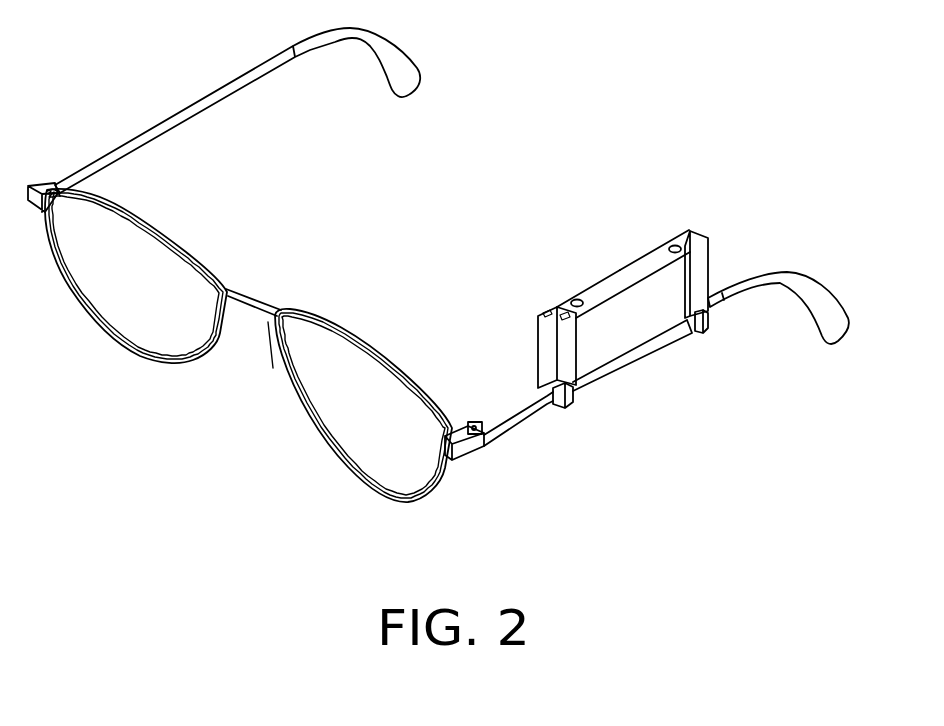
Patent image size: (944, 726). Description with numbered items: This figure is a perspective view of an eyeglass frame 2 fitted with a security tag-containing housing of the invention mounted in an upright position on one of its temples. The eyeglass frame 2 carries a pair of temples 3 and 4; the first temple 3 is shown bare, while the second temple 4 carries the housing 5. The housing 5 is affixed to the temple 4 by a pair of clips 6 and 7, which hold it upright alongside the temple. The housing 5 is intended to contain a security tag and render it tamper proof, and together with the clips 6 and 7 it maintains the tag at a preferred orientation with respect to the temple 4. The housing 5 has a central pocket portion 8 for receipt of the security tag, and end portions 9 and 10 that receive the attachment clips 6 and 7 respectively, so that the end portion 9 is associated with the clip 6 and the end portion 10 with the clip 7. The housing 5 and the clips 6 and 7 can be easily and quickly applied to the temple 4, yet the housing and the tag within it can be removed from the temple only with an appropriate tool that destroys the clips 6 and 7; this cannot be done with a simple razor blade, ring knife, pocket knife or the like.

The eyeglass frame 2 is at (258, 288).
The temple 3 is at (117, 145).
The temple 4 is at (516, 432).
The housing 5 is at (601, 284).
The clip 6 is at (706, 328).
The clip 7 is at (571, 409).
The central pocket portion 8 is at (637, 292).
The end portion 9 is at (710, 258).
The end portion 10 is at (548, 338).